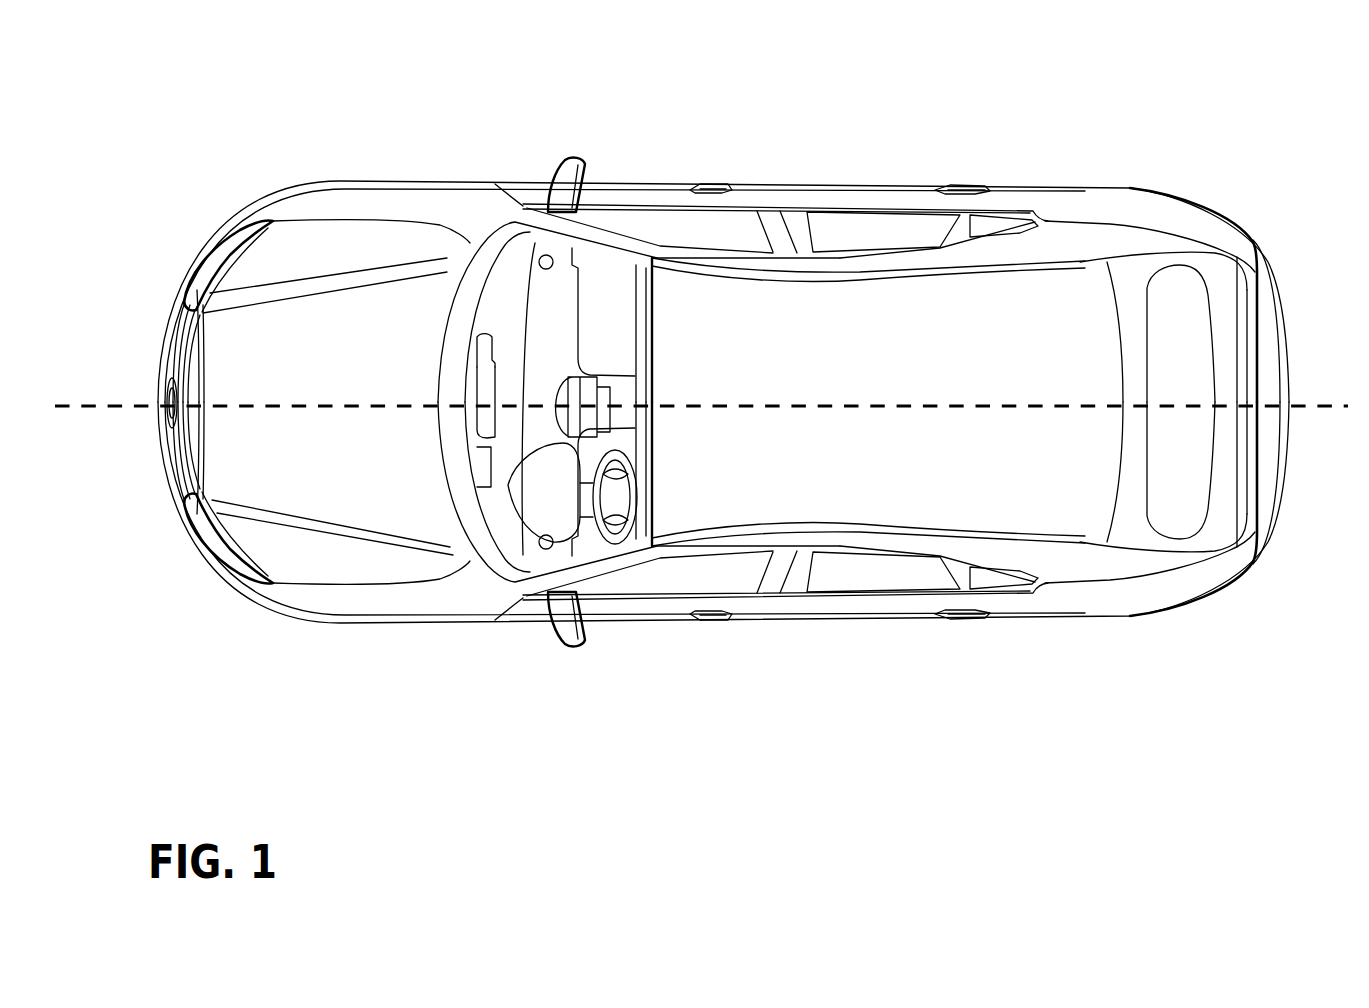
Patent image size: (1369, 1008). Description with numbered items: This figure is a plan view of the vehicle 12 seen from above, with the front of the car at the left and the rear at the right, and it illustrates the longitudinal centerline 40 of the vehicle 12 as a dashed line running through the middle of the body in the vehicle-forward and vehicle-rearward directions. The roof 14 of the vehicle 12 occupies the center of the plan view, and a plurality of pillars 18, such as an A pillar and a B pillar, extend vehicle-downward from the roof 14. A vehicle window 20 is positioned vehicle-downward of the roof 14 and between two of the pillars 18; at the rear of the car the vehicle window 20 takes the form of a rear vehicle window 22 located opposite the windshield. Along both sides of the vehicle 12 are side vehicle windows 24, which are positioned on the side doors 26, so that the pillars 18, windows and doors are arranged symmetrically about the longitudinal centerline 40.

The vehicle 12 is at (1052, 126).
The roof 14 is at (1065, 305).
The pillars 18 is at (597, 252).
The vehicle window 20 is at (673, 218).
The rear vehicle window 22 is at (1183, 467).
The side vehicle windows 24 is at (730, 228).
The side doors 26 is at (621, 195).
The longitudinal centerline 40 is at (276, 412).